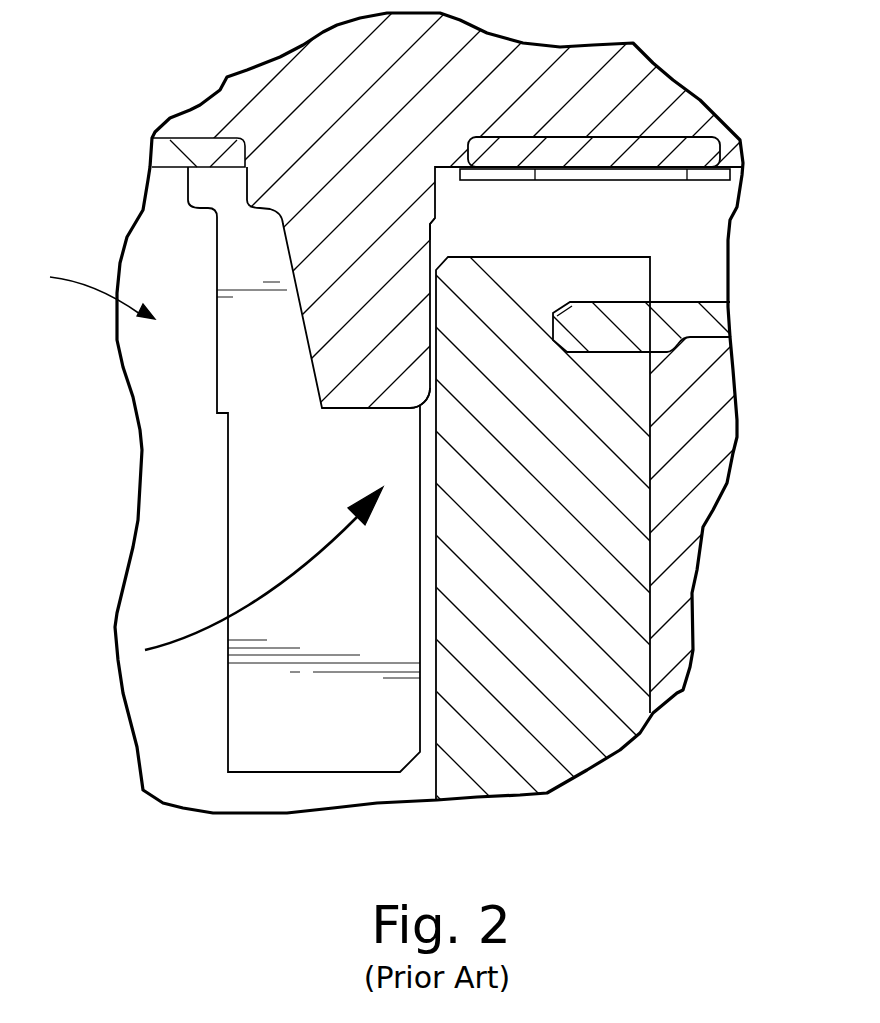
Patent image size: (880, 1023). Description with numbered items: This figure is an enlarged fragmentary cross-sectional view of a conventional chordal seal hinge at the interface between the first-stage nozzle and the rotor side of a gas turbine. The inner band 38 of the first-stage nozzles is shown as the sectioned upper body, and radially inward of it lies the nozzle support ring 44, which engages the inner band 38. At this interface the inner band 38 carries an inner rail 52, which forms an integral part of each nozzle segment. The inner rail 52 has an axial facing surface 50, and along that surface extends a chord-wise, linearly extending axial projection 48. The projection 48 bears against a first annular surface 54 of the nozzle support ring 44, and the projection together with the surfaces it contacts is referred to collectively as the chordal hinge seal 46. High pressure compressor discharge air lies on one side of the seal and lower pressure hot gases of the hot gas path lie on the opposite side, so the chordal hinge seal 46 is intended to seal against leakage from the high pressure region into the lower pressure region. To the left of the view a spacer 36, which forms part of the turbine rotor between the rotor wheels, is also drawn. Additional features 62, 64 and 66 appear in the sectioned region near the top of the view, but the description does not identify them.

The spacer 36 is at (167, 563).
The inner band 38 is at (275, 100).
The nozzle support ring 44 is at (575, 758).
The chordal hinge seal 46 is at (87, 292).
The axial projection 48 is at (412, 410).
The axial facing surface 50 is at (435, 253).
The inner rail 52 is at (313, 230).
The first annular surface 54 is at (435, 557).
The seal ring 62 is at (563, 236).
The seal runner 64 is at (650, 257).
The retaining plate 66 is at (655, 181).